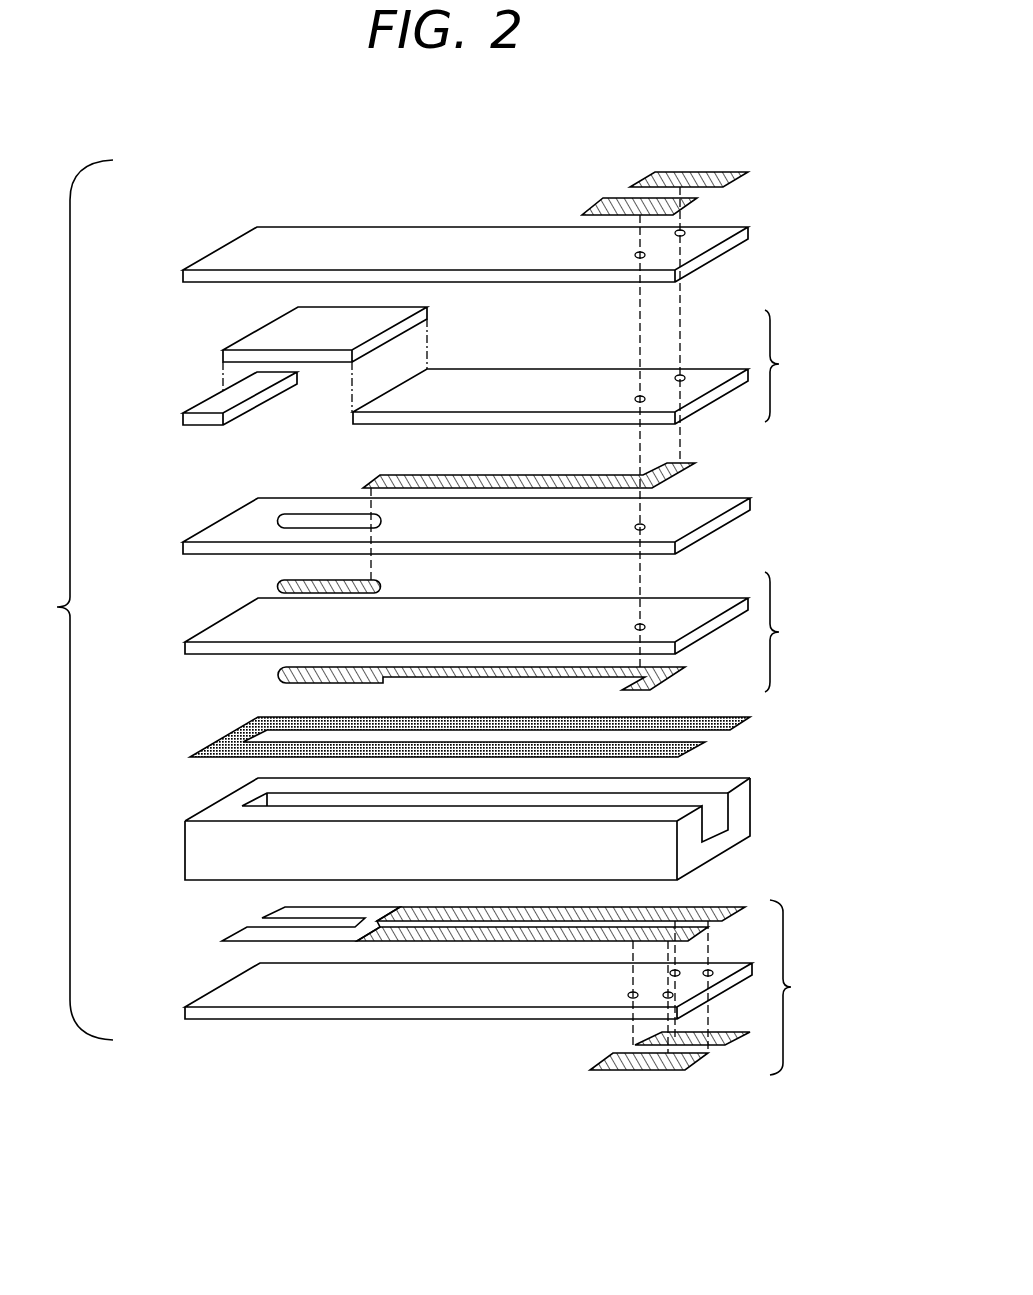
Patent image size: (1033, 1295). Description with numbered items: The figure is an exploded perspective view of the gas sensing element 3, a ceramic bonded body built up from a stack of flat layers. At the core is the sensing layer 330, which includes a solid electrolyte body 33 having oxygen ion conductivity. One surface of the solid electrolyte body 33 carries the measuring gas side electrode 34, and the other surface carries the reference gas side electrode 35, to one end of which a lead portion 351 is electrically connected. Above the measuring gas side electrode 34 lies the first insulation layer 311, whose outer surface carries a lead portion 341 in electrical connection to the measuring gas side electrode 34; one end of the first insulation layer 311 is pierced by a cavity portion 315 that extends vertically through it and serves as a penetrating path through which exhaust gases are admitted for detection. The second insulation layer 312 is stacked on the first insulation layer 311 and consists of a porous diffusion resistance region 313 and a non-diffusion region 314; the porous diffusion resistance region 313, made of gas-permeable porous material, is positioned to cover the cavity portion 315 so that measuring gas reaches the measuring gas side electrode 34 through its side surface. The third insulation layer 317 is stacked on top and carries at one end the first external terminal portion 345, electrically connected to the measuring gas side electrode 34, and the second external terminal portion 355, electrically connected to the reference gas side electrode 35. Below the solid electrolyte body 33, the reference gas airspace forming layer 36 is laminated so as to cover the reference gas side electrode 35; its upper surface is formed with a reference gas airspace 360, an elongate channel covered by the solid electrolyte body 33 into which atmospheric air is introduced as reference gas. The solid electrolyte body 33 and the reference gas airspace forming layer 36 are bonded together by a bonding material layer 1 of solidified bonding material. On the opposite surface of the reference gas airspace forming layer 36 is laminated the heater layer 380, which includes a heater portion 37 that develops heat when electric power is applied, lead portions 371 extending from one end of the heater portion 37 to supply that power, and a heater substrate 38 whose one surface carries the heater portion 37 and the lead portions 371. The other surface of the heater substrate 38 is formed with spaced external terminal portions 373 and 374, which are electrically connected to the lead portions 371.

The bonding material layer 1 is at (245, 732).
The gas sensing element 3 is at (73, 600).
The first insulation layer 311 is at (697, 508).
The second insulation layer 312 is at (794, 366).
The porous diffusion resistance region 313 is at (380, 317).
The non-diffusion region 314 is at (582, 387).
The cavity portion 315 is at (323, 520).
The third insulation layer 317 is at (423, 242).
The solid electrolyte body 33 is at (262, 623).
The sensing layer 330 is at (795, 632).
The measuring gas side electrode 34 is at (303, 583).
The lead portion 341 is at (437, 480).
The first external terminal portion 345 is at (700, 177).
The reference gas side electrode 35 is at (320, 673).
The lead portion 351 is at (497, 670).
The second external terminal portion 355 is at (622, 205).
The reference gas airspace forming layer 36 is at (737, 833).
The reference gas airspace 360 is at (717, 812).
The heater portion 37 is at (279, 941).
The lead portions 371 is at (477, 932).
The external terminal portion 373 is at (740, 1037).
The external terminal portion 374 is at (697, 1065).
The heater substrate 38 is at (373, 987).
The heater layer 380 is at (804, 987).